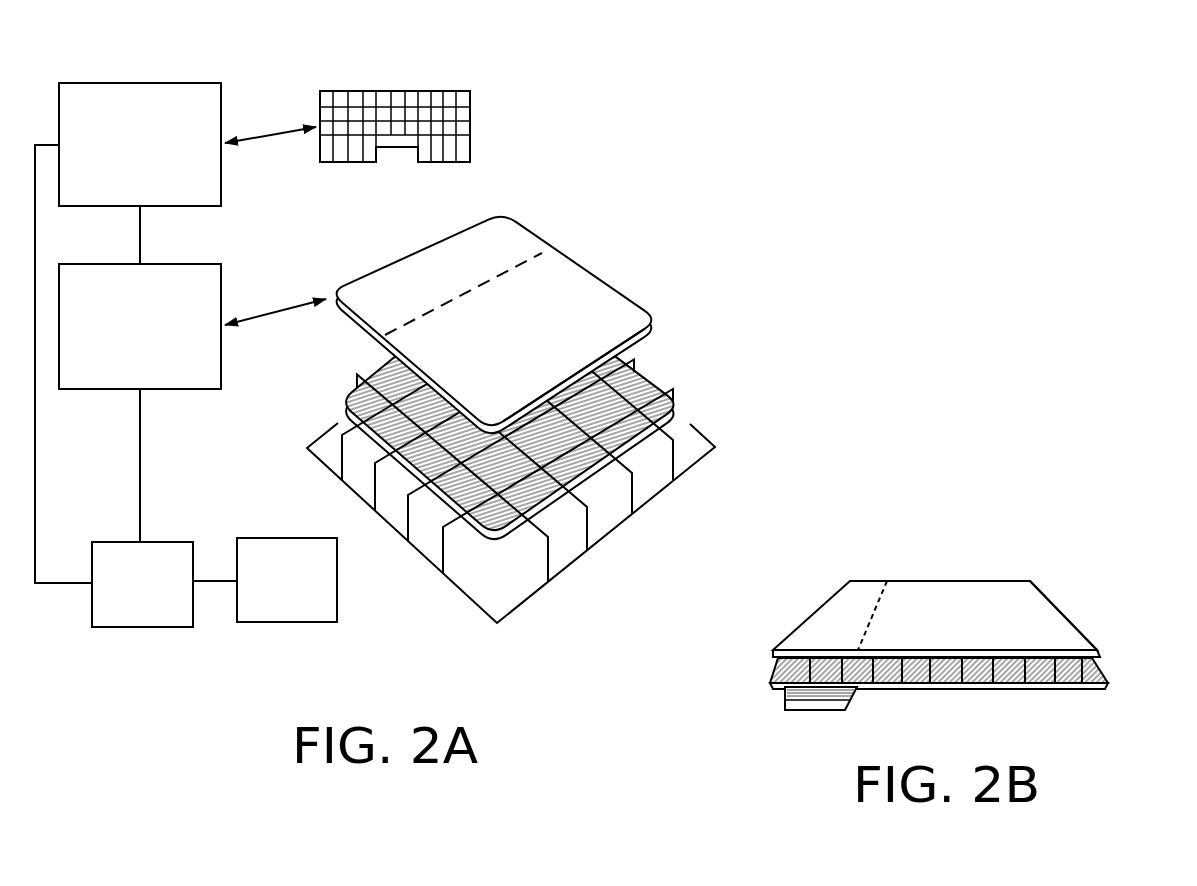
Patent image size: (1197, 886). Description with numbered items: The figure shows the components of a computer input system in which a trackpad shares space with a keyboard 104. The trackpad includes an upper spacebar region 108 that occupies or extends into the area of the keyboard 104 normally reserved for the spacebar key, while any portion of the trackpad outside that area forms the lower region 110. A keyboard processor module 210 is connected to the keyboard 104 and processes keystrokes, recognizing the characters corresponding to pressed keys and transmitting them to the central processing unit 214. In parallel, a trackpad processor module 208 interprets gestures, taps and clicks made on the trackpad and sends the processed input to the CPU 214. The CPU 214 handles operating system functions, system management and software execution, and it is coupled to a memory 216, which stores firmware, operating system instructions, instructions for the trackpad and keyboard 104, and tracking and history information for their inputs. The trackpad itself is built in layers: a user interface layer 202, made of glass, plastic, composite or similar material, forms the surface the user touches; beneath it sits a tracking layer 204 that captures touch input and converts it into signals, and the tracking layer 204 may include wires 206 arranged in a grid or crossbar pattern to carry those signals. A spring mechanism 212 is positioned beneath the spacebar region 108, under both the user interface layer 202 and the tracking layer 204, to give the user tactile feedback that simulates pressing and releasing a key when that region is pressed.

In FIG. 2A, the keyboard 104 is at (505, 35).
In FIG. 2A, the upper spacebar region 108 is at (538, 225).
In FIG. 2B, the upper spacebar region 108 is at (866, 577).
In FIG. 2A, the lower region 110 is at (730, 327).
In FIG. 2B, the lower region 110 is at (973, 578).
In FIG. 2A, the user interface layer 202 is at (694, 278).
In FIG. 2B, the user interface layer 202 is at (936, 591).
In FIG. 2A, the tracking layer 204 is at (686, 406).
In FIG. 2B, the tracking layer 204 is at (1104, 667).
In FIG. 2A, the wires 206 is at (716, 461).
In FIG. 2A, the trackpad processor module 208 is at (158, 376).
In FIG. 2A, the keyboard processor module 210 is at (158, 195).
In FIG. 2B, the spring mechanism 212 is at (800, 721).
In FIG. 2A, the central processing unit (CPU) 214 is at (142, 584).
In FIG. 2A, the memory 216 is at (287, 580).